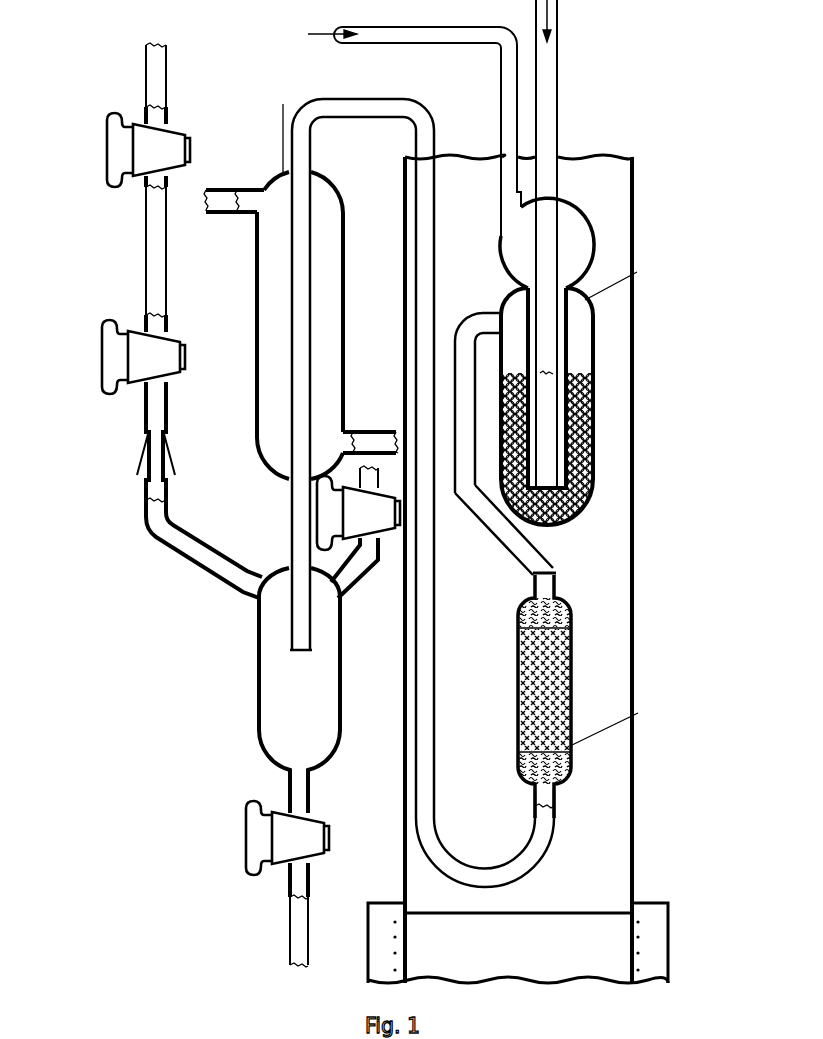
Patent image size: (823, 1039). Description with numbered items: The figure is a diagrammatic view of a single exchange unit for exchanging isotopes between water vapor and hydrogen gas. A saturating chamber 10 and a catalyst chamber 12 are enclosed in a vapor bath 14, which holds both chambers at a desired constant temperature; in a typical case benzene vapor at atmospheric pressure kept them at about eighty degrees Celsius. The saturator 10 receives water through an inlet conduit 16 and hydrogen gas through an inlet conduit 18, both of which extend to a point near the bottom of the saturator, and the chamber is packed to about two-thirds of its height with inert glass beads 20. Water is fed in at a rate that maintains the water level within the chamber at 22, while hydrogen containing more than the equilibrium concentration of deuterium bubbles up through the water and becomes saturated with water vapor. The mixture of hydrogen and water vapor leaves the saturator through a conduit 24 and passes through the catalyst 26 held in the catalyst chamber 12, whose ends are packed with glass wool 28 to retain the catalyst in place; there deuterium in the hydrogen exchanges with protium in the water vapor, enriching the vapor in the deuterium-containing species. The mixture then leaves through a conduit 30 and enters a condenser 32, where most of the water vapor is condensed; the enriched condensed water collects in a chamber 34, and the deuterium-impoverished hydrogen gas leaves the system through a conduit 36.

The saturating chamber 10 is at (585, 345).
The catalyst chamber 12 is at (572, 650).
The vapor bath 14 is at (632, 495).
The inlet conduit for water 16 is at (550, 85).
The inlet conduit for hydrogen gas 18 is at (513, 92).
The glass beads 20 is at (577, 418).
The water level 22 is at (593, 432).
The conduit 24 is at (540, 555).
The catalyst 26 is at (567, 707).
The glass wool 28 is at (563, 617).
The conduit 30 is at (438, 185).
The condenser 32 is at (342, 263).
The chamber 34 is at (333, 647).
The conduit 36 is at (192, 532).